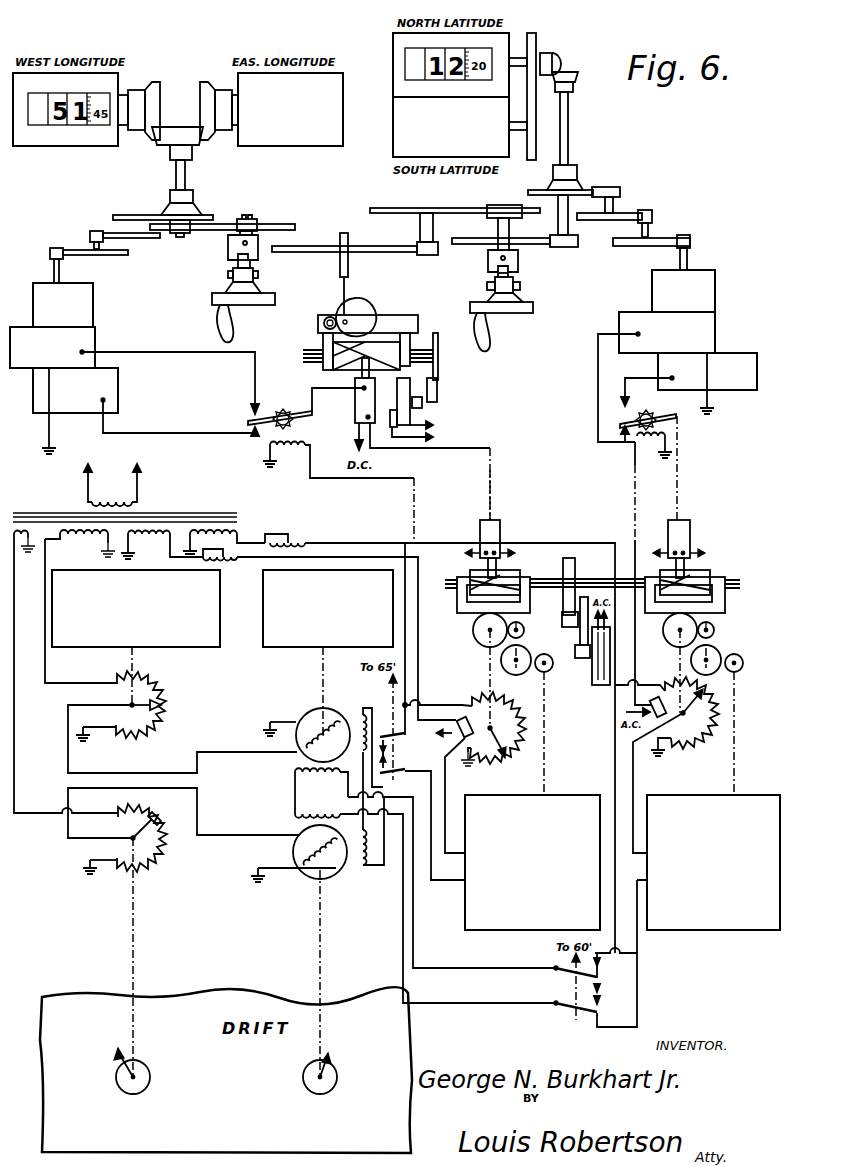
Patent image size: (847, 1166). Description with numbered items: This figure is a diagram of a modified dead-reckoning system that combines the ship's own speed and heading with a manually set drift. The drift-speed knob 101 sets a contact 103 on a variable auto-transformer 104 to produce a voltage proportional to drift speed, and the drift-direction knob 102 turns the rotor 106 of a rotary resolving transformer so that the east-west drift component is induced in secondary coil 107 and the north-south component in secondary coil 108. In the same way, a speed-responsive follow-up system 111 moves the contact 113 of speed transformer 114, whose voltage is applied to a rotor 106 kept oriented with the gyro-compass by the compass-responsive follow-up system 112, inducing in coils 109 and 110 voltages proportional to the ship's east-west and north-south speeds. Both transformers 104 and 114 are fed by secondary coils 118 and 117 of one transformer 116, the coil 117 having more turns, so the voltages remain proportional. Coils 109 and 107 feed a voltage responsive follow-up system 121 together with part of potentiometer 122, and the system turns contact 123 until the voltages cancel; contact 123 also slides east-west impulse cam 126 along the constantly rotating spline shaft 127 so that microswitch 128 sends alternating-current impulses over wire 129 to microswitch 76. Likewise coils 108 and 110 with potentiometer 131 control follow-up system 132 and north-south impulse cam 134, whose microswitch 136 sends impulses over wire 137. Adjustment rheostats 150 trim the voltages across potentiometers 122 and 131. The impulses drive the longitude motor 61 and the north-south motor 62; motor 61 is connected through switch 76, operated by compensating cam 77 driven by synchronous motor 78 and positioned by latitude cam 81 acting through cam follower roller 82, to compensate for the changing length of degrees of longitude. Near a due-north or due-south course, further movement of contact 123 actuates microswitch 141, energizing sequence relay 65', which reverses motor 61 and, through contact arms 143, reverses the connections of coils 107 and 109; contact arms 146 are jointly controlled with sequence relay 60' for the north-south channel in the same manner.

The motor 61 is at (80, 333).
The motor 62 is at (703, 333).
The sequence relay 65' is at (280, 404).
The sequence relay 60' is at (631, 441).
The switch 76 is at (357, 413).
The compensating cam 77 is at (380, 350).
The synchronous motor 78 is at (418, 420).
The latitude cam 81 is at (368, 307).
The cam follower roller 82 is at (325, 317).
The drift-speed knob 101 is at (145, 1082).
The drift-direction knob 102 is at (306, 1063).
The contact 103 is at (160, 846).
The variable auto-transformer 104 is at (158, 870).
The rotor 106 is at (308, 712).
The secondary coil 107 is at (368, 872).
The secondary coil 108 is at (295, 812).
The secondary coil 109 is at (366, 715).
The secondary coil 110 is at (295, 771).
The speed-responsive follow-up system 111 is at (212, 640).
The compass-responsive follow-up system 112 is at (290, 640).
The contact 113 is at (140, 700).
The variable auto-transformer 114 is at (165, 720).
The transformer 116 is at (140, 517).
The secondary coil 117 is at (79, 537).
The secondary coil 118 is at (22, 530).
The voltage responsive follow-up system 121 is at (591, 780).
The potentiometer 122 is at (524, 708).
The contact 123 is at (490, 768).
The east-west impulse cam 126 is at (513, 578).
The spline shaft 127 is at (543, 578).
The microswitch 128 is at (480, 527).
The wire 129 is at (492, 518).
The potentiometer 131 is at (676, 757).
The voltage-responsive follow-up system 132 is at (762, 796).
The north-south impulse cam 134 is at (718, 578).
The microswitch 136 is at (690, 535).
The wire 137 is at (683, 513).
The microswitch 141 is at (466, 738).
The contact arms 143 is at (388, 775).
The contact arms 146 is at (557, 1005).
The adjustment rheostats 150 is at (292, 540).